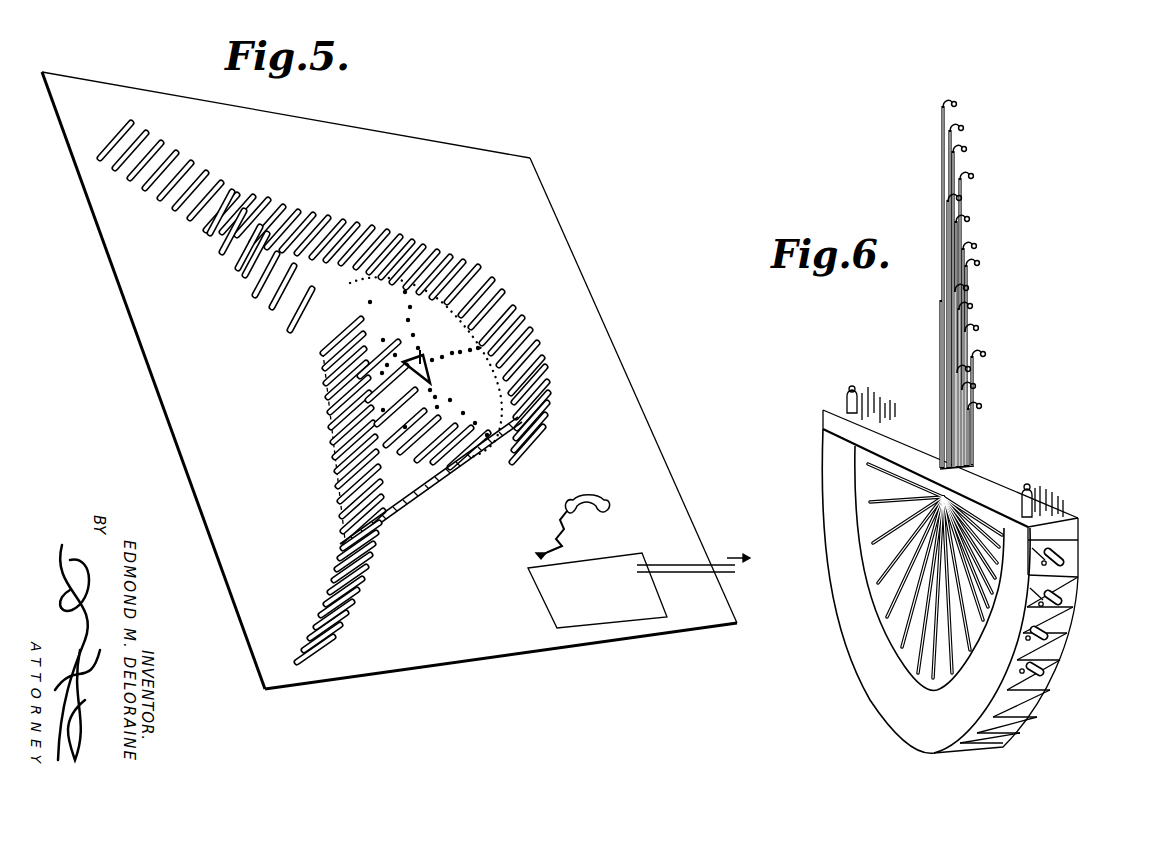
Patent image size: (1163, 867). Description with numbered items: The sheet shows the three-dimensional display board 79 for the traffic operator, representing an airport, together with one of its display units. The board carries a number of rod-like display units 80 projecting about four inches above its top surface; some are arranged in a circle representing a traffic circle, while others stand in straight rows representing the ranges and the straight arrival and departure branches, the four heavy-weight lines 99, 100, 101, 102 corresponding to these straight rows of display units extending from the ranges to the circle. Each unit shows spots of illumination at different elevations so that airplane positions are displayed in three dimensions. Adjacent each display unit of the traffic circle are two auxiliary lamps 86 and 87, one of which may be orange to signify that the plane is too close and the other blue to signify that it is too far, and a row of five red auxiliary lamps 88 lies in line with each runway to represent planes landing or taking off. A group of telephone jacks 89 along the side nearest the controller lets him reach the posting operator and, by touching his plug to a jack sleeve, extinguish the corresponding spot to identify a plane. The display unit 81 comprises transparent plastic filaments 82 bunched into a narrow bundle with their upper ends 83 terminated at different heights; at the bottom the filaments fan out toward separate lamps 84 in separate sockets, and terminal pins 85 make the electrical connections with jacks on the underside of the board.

In FIG. 5, the display board 79 is at (482, 640).
In FIG. 5, the rod-like display units 80 is at (297, 666).
In FIG. 5, the display unit 81 is at (287, 193).
In FIG. 6, the display unit 81 is at (857, 708).
In FIG. 6, the transparent plastic filaments 82 is at (970, 340).
In FIG. 6, the upper ends of the filaments 83 is at (973, 307).
In FIG. 6, the lamps 84 is at (1063, 559).
In FIG. 6, the terminal pins 85 is at (1048, 490).
In FIG. 5, the auxiliary lamp 86 is at (425, 292).
In FIG. 5, the auxiliary lamp 87 is at (425, 292).
In FIG. 5, the red auxiliary lamps 88 is at (455, 355).
In FIG. 5, the telephone jacks 89 is at (637, 568).
In FIG. 5, the heavy-weight line 99 is at (300, 249).
In FIG. 5, the heavy-weight line 100 is at (282, 321).
In FIG. 5, the heavy-weight line 101 is at (331, 472).
In FIG. 5, the heavy-weight line 102 is at (433, 497).